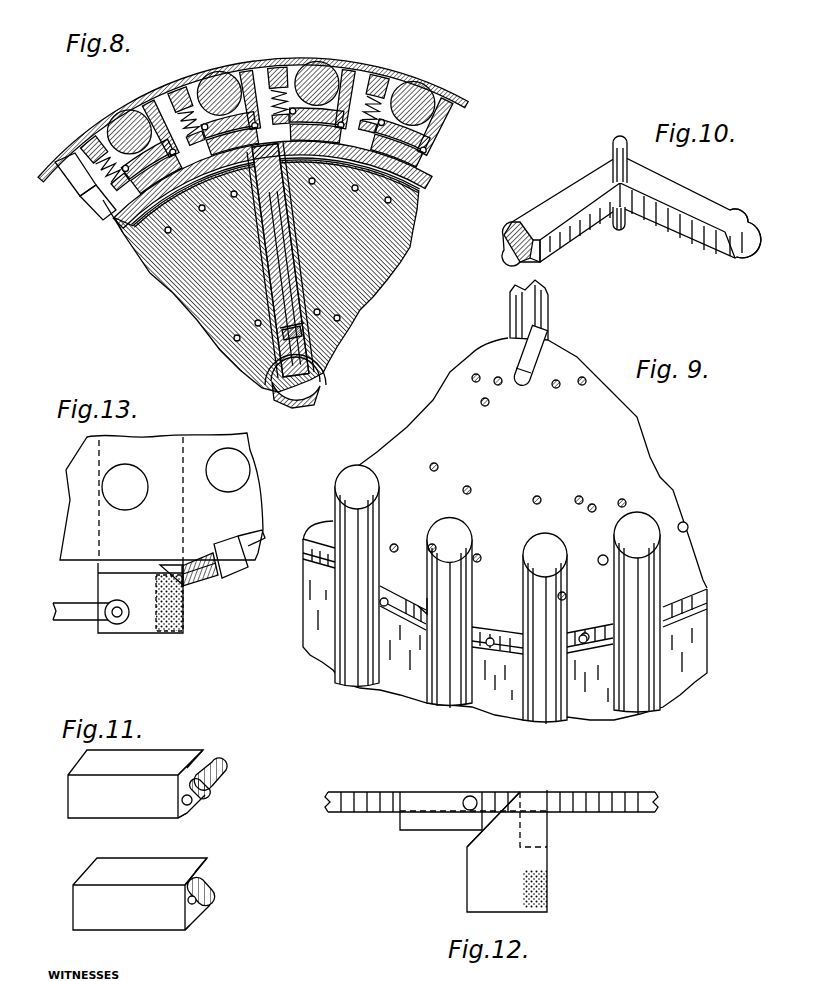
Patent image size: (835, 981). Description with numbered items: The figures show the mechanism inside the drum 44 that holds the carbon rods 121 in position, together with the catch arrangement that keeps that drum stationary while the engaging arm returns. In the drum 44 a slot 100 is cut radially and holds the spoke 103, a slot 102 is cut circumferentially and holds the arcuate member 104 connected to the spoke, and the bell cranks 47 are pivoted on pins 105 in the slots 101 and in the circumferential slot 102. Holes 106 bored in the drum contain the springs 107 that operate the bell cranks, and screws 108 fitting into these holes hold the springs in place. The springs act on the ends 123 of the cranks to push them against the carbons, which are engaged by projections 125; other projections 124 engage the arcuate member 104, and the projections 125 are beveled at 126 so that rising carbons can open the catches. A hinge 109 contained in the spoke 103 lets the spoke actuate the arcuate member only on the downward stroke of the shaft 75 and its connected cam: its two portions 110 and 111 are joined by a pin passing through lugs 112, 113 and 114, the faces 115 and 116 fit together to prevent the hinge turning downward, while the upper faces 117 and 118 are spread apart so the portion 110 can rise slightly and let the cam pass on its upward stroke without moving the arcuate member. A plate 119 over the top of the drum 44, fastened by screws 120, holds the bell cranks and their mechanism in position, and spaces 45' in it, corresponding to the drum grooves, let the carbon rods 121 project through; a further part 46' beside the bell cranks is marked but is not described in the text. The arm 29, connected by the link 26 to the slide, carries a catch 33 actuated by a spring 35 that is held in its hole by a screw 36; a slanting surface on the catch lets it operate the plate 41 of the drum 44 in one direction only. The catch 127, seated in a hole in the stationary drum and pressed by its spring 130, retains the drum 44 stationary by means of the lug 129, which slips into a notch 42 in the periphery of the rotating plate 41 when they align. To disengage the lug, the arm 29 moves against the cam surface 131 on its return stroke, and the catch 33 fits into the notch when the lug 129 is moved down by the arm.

In FIG. 13, the link 26 is at (72, 620).
In FIG. 13, the arm 29 is at (145, 628).
In FIG. 12, the arm 29 is at (418, 826).
In FIG. 13, the catch 33 is at (173, 578).
In FIG. 13, the spring 35 is at (185, 622).
In FIG. 12, the screw 36 is at (467, 797).
In FIG. 13, the plate 41 is at (245, 506).
In FIG. 12, the plate 41 is at (622, 808).
In FIG. 13, the notches 42 is at (212, 548).
In FIG. 8, the drum 44 is at (183, 293).
In FIG. 9, the drum 44 is at (700, 645).
In FIG. 9, the spaces 45' is at (408, 596).
In FIG. 8, the holder bar 46' is at (235, 128).
In FIG. 8, the bell cranks 47 is at (241, 70).
In FIG. 10, the bell cranks 47 is at (682, 198).
In FIG. 8, the shaft 75 is at (305, 400).
In FIG. 9, the shaft 75 is at (543, 300).
In FIG. 8, the slot 100 is at (297, 295).
In FIG. 8, the slots 101 is at (172, 84).
In FIG. 8, the slot 102 is at (118, 212).
In FIG. 8, the spoke 103 is at (280, 230).
In FIG. 8, the arcuate member 104 is at (420, 168).
In FIG. 8, the pins 105 is at (437, 150).
In FIG. 10, the pins 105 is at (615, 143).
In FIG. 9, the pins 105 is at (688, 525).
In FIG. 8, the holes 106 is at (92, 178).
In FIG. 8, the springs 107 is at (112, 204).
In FIG. 8, the screws 108 is at (298, 72).
In FIG. 9, the screws 108 is at (585, 635).
In FIG. 8, the hinge 109 is at (240, 362).
In FIG. 9, the hinge 109 is at (540, 370).
In FIG. 11, the hinge portion 110 is at (122, 916).
In FIG. 11, the hinge portion 111 is at (140, 812).
In FIG. 11, the lug 112 is at (198, 800).
In FIG. 11, the lug 113 is at (222, 774).
In FIG. 11, the lug 114 is at (214, 895).
In FIG. 11, the face 115 is at (190, 926).
In FIG. 11, the face 116 is at (195, 810).
In FIG. 11, the upper face 117 is at (205, 870).
In FIG. 11, the upper face 118 is at (207, 758).
In FIG. 9, the plate 119 is at (705, 590).
In FIG. 9, the screws 120 is at (393, 545).
In FIG. 8, the carbon rods 121 is at (115, 122).
In FIG. 9, the carbon rods 121 is at (656, 568).
In FIG. 10, the ends 123 is at (722, 252).
In FIG. 10, the projections 124 is at (735, 216).
In FIG. 10, the projections 125 is at (508, 242).
In FIG. 10, the bevel 126 is at (531, 245).
In FIG. 13, the catch 127 is at (240, 563).
In FIG. 12, the catch 127 is at (540, 858).
In FIG. 13, the lug 129 is at (250, 545).
In FIG. 12, the lug 129 is at (535, 830).
In FIG. 12, the spring 130 is at (548, 906).
In FIG. 13, the cam surface 131 is at (198, 582).
In FIG. 12, the cam surface 131 is at (477, 833).